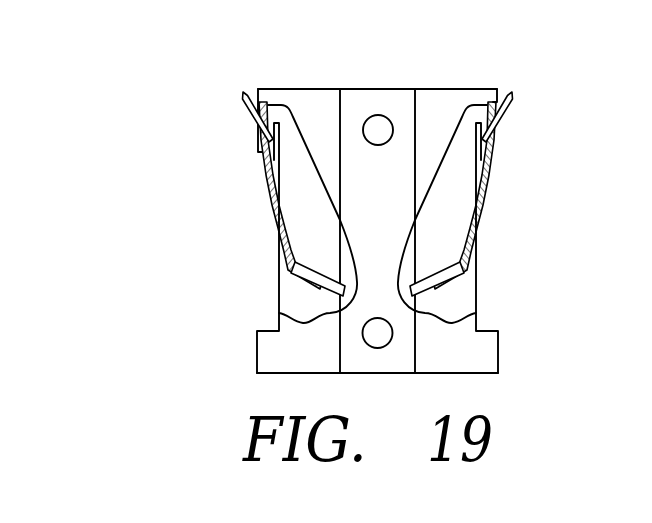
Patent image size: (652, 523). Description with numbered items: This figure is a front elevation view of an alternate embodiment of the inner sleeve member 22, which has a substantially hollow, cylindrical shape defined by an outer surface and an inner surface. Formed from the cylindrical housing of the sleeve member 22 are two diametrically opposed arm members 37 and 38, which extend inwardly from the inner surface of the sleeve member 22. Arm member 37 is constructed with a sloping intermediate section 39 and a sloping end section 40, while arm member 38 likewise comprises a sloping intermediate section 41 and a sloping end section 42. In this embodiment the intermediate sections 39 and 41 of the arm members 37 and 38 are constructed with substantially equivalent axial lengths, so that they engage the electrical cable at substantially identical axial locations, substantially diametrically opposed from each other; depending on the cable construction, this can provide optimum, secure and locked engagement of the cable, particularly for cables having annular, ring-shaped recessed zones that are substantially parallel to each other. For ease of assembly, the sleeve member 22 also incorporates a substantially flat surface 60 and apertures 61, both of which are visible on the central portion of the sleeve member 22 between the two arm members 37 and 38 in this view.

The inner sleeve member 22 is at (495, 289).
The arm member 37 is at (496, 211).
The arm member 38 is at (262, 219).
The intermediate section 39 is at (495, 160).
The end section 40 is at (427, 287).
The intermediate section 41 is at (262, 173).
The end section 42 is at (302, 288).
The flat surface 60 is at (357, 105).
The apertures 61 is at (390, 117).